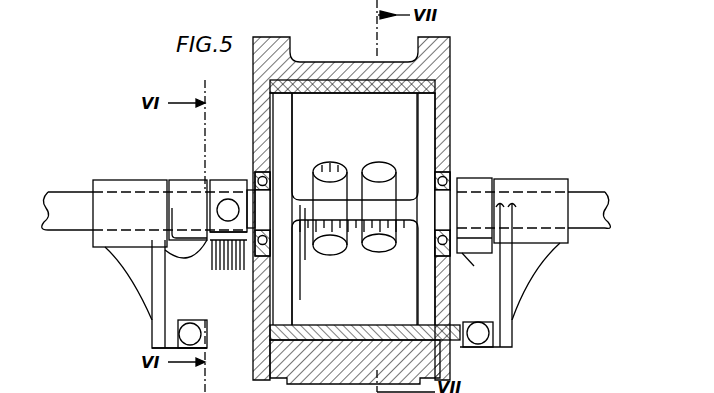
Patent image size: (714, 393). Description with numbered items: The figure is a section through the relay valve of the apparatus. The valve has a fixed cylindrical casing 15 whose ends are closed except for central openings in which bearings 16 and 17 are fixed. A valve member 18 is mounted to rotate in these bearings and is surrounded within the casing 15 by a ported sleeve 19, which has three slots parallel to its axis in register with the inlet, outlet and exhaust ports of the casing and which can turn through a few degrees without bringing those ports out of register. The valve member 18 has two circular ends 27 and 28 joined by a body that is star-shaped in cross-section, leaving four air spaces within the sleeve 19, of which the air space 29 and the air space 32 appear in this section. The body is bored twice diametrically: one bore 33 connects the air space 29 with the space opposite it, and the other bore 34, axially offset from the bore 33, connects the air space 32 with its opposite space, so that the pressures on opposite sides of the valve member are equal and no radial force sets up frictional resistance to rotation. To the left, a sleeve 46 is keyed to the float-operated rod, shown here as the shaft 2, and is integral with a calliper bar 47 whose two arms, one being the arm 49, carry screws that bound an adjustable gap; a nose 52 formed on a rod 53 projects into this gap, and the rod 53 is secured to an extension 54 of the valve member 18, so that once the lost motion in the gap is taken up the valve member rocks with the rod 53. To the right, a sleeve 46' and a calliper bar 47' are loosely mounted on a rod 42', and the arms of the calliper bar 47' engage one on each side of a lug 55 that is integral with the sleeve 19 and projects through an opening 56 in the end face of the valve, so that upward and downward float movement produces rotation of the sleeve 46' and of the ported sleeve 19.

The drive shaft 2 is at (80, 222).
The cylindrical casing 15 is at (372, 63).
The bearing 16 is at (452, 173).
The bearing 17 is at (258, 175).
The valve member 18 is at (311, 252).
The ported sleeve 19 is at (436, 89).
The circular end 27 is at (285, 131).
The circular end 28 is at (430, 128).
The air space 29 is at (355, 146).
The air space 32 is at (355, 272).
The bore 33 is at (318, 166).
The bore 34 is at (390, 252).
The rod 42' is at (607, 210).
The sleeve 46 is at (130, 193).
The sleeve 46' is at (512, 197).
The calliper bar 47 is at (156, 264).
The calliper bar 47' is at (518, 275).
The arm 49 is at (208, 340).
The nose 52 is at (182, 320).
The rod 53 is at (228, 251).
The extension 54 is at (222, 197).
The lug 55 is at (480, 344).
The opening 56 is at (456, 343).